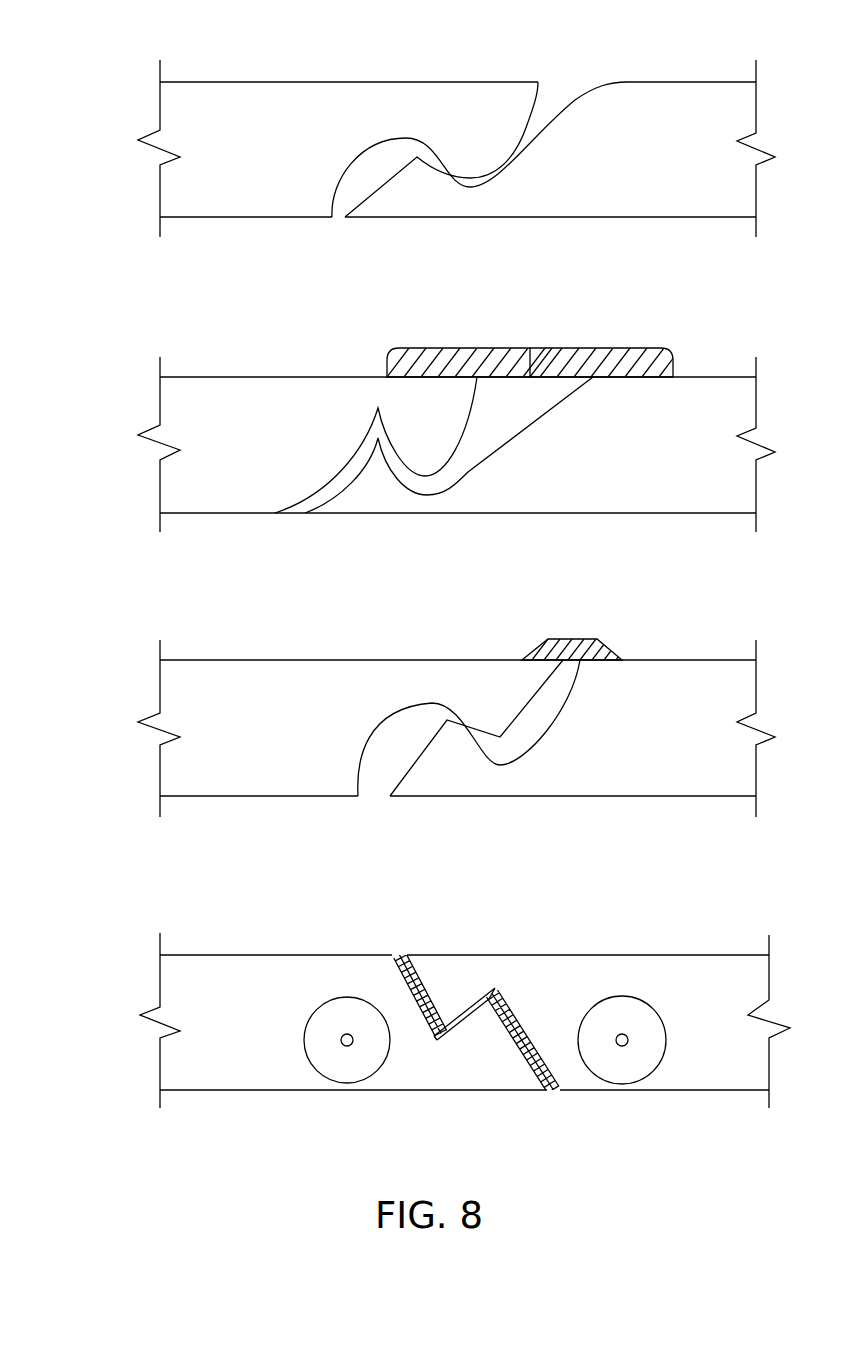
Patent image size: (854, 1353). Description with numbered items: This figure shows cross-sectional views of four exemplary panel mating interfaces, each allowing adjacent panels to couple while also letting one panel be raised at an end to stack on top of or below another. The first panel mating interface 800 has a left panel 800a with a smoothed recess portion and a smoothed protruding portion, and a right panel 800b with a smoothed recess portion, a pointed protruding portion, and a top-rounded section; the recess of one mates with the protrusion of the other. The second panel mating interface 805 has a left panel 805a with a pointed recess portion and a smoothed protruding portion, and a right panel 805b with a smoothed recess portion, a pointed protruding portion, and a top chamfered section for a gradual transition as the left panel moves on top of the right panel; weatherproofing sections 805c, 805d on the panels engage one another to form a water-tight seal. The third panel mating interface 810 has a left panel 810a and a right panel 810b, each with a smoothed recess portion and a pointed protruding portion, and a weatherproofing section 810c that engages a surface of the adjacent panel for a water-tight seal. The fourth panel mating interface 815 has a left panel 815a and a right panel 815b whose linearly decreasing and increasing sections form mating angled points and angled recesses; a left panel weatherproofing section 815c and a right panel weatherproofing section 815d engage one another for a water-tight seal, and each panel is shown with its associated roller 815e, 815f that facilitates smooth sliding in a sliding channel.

The first panel mating interface 800 is at (210, 33).
The left panel 800a is at (292, 141).
The right panel 800b is at (692, 141).
The second panel mating interface 805 is at (200, 325).
The left panel 805a is at (292, 438).
The right panel 805b is at (692, 438).
The weatherproofing section 805c is at (449, 348).
The weatherproofing section 805d is at (595, 348).
The third panel mating interface 810 is at (193, 618).
The left panel 810a is at (292, 721).
The right panel 810b is at (692, 721).
The weatherproofing section 810c is at (570, 639).
The fourth panel mating interface 815 is at (203, 913).
The left panel 815a is at (293, 1016).
The right panel 815b is at (735, 1014).
The left panel weatherproofing section 815c is at (452, 1029).
The right panel weatherproofing section 815d is at (465, 1011).
The roller 815e is at (347, 1083).
The roller 815f is at (622, 1084).